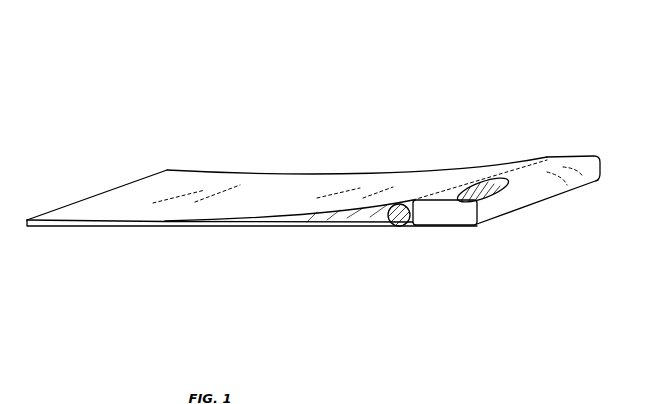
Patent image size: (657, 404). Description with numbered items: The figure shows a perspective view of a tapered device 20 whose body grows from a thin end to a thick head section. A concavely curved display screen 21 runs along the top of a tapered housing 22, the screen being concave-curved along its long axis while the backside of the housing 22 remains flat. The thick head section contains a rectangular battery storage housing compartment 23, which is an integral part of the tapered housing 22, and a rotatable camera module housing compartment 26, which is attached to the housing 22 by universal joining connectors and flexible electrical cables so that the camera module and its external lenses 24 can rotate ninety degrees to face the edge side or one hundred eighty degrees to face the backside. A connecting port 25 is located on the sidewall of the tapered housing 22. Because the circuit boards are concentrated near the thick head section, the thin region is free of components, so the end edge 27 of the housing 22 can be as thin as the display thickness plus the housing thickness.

The tapered device 20 is at (137, 97).
The concavely curved display screen 21 is at (280, 184).
The tapered housing 22 is at (295, 230).
The battery storage housing compartment 23 is at (570, 156).
The external lenses 24 is at (503, 190).
The connecting port 25 is at (398, 228).
The rotatable camera module housing compartment 26 is at (495, 219).
The end edge 27 is at (75, 201).